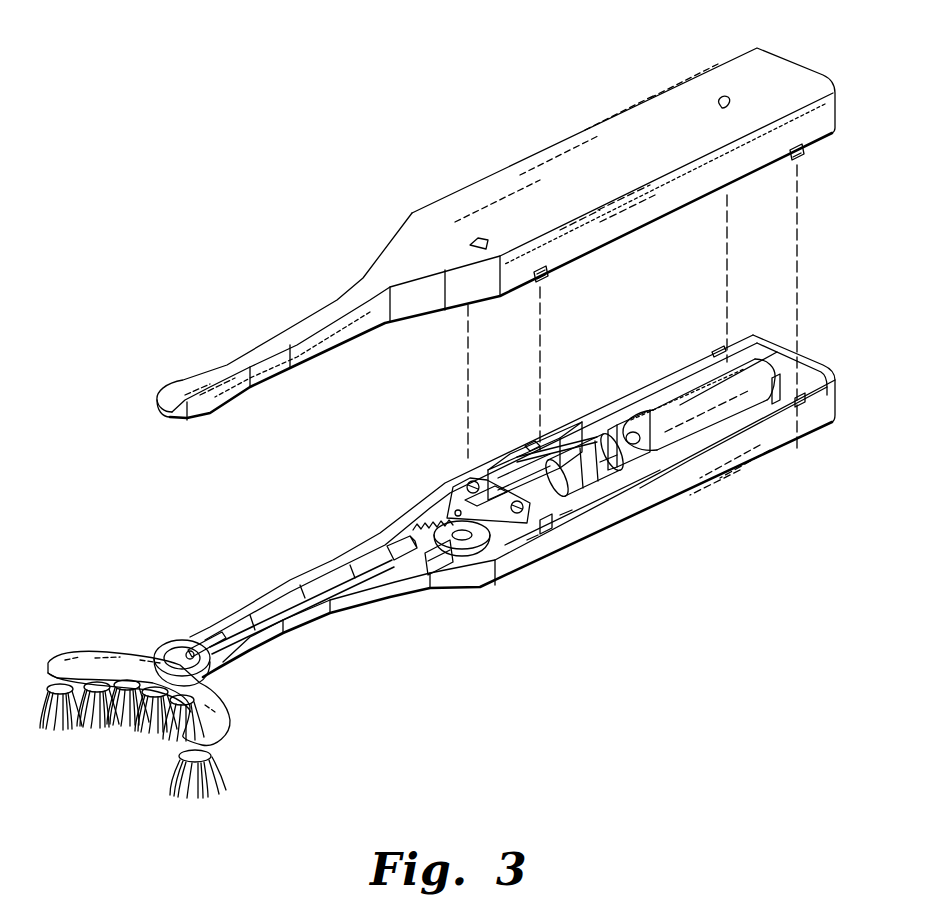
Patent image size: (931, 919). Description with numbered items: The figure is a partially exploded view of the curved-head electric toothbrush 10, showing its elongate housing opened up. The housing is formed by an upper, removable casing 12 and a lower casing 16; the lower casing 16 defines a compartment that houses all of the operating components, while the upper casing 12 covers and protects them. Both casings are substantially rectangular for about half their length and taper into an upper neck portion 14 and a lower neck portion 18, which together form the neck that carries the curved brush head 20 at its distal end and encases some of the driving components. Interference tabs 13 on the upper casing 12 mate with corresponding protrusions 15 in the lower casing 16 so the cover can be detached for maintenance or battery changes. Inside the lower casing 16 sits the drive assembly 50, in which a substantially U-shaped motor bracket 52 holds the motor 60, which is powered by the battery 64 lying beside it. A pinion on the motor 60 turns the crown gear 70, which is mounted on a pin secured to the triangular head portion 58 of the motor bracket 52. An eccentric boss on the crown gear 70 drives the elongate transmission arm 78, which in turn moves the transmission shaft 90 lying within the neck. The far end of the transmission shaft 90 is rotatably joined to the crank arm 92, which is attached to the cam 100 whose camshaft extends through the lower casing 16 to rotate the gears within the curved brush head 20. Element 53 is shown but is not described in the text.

The curved-head electric toothbrush 10 is at (172, 88).
The upper casing 12 is at (592, 143).
The interference tabs 13 is at (795, 161).
The upper neck portion 14 is at (283, 331).
The protrusions 15 is at (796, 450).
The lower casing 16 is at (702, 467).
The lower neck portion 18 is at (283, 640).
The curved brush head 20 is at (95, 615).
The drive assembly 50 is at (357, 500).
The motor bracket 52 is at (552, 441).
The mounting plate 53 is at (590, 524).
The triangular head portion 58 is at (440, 486).
The motor 60 is at (612, 490).
The battery 64 is at (684, 391).
The crown gear 70 is at (490, 546).
The transmission arm 78 is at (441, 558).
The transmission shaft 90 is at (300, 582).
The crank arm 92 is at (210, 636).
The cam 100 is at (180, 641).